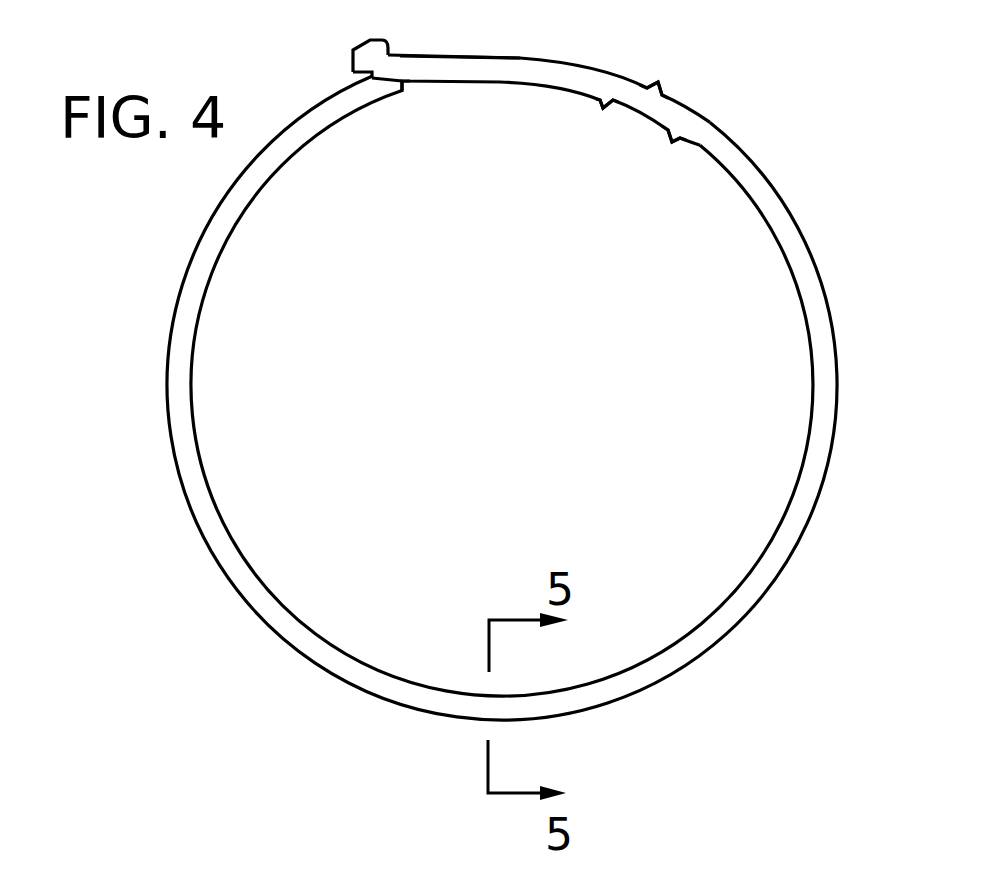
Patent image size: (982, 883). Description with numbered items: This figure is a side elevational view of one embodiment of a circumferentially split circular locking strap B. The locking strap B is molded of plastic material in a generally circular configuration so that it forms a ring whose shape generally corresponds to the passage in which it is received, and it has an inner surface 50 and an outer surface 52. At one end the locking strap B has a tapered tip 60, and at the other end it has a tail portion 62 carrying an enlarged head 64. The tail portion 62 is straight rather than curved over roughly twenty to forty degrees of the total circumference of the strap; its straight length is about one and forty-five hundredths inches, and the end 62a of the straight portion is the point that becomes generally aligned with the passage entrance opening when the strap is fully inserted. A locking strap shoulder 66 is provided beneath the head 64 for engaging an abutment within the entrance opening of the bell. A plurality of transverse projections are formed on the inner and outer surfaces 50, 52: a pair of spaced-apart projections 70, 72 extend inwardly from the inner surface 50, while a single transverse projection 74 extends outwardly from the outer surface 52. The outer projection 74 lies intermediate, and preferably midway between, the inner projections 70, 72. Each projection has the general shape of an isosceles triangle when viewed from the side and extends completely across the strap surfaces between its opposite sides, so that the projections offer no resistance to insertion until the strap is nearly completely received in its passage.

The locking strap B is at (513, 360).
The inner surface 50 is at (773, 537).
The outer surface 52 is at (788, 561).
The tapered tip 60 is at (403, 83).
The tail portion 62 is at (420, 55).
The end of the straight portion 62a is at (498, 53).
The enlarged head 64 is at (363, 47).
The locking strap shoulder 66 is at (370, 76).
The inner projection 70 is at (602, 102).
The inner projection 72 is at (678, 142).
The outer projection 74 is at (663, 87).